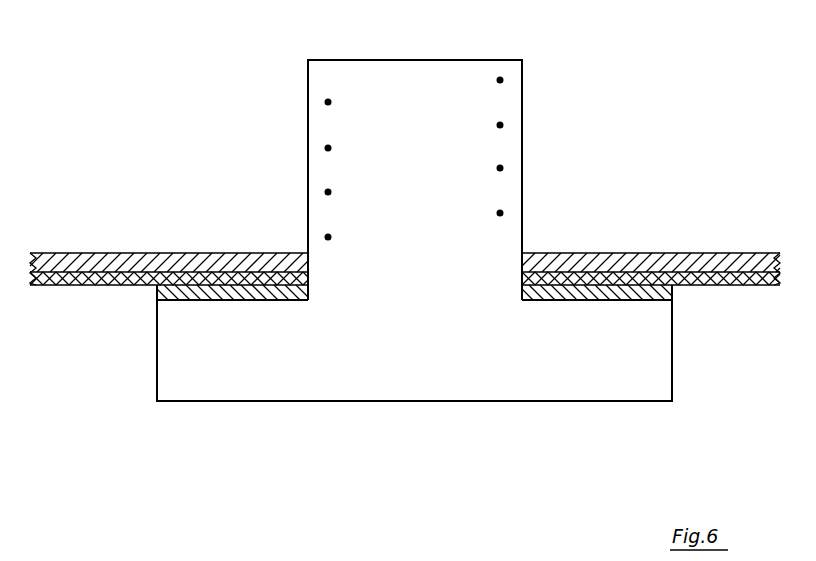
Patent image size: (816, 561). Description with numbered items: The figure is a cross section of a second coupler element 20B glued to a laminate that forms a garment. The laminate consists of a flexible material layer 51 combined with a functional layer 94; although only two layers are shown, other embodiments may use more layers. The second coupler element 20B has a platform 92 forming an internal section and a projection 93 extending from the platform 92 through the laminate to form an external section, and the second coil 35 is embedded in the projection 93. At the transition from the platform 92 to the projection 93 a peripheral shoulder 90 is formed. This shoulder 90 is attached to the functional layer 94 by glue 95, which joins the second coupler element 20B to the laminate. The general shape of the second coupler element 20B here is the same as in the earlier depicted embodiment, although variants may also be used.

The second coil 35 is at (328, 148).
The projection 93 is at (522, 237).
The flexible material layer 51 is at (90, 266).
The functional layer 94 is at (82, 286).
The glue 95 is at (157, 291).
The peripheral shoulder 90 is at (655, 300).
The platform 92 is at (683, 377).
The second coupler element 20B is at (373, 443).